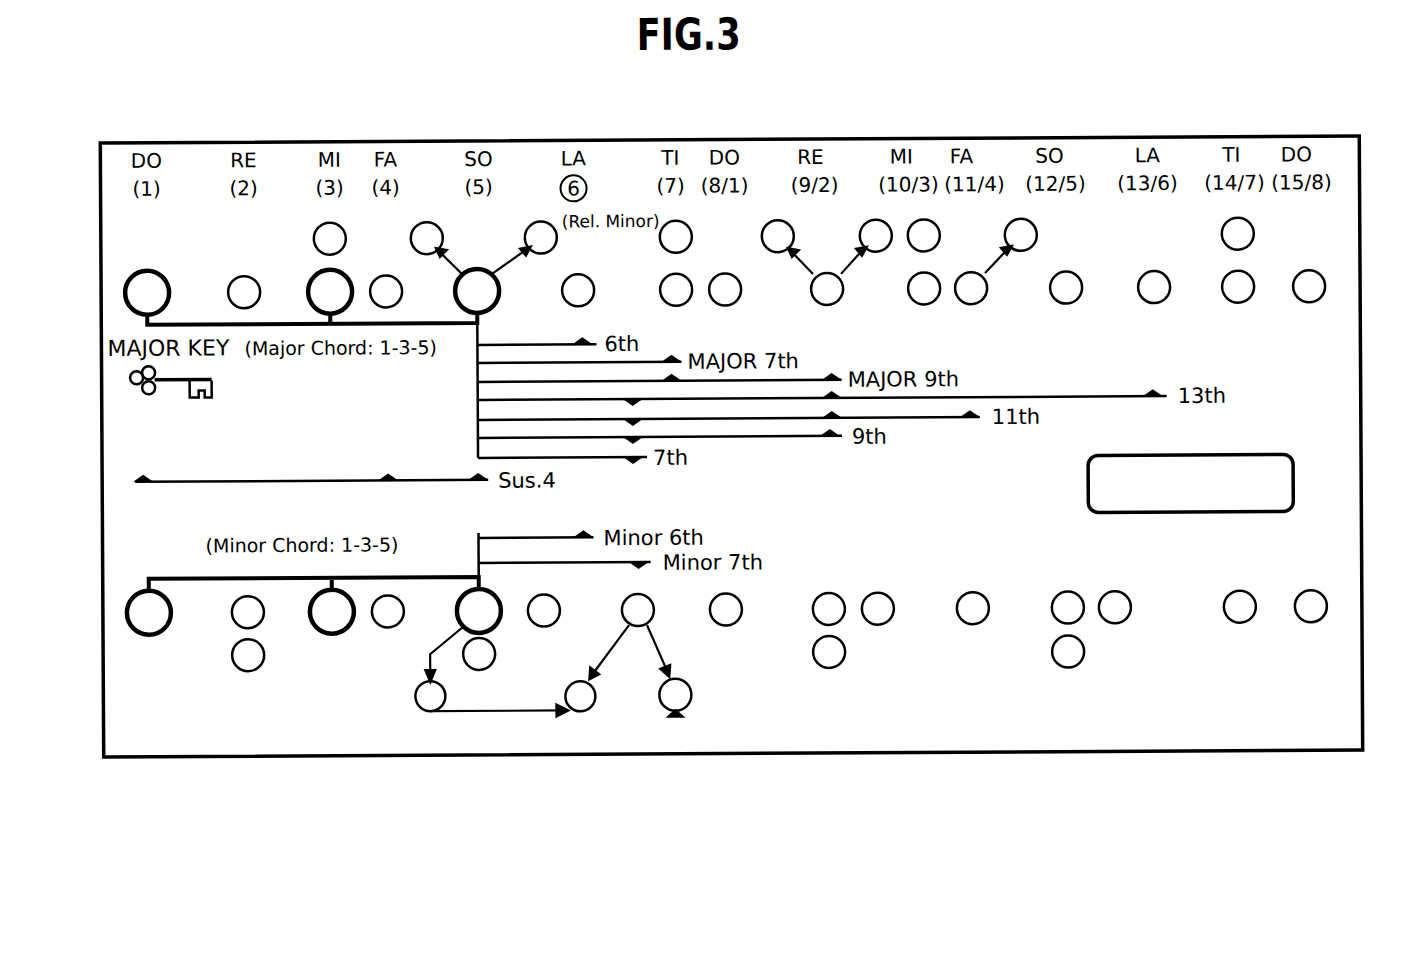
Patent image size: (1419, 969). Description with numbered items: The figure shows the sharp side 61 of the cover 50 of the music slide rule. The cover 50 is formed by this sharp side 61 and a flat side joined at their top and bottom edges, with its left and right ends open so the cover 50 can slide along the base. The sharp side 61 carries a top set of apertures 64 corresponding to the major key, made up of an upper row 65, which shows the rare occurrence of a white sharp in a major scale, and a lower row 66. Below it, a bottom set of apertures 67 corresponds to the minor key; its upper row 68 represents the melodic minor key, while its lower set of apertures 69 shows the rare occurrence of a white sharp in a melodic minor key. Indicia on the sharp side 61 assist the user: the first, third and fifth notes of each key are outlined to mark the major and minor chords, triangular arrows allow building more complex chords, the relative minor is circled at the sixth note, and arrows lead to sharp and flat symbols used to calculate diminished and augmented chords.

The cover 50 is at (1300, 106).
The sharp side 61 is at (1332, 499).
The top set of apertures 64 is at (122, 156).
The upper row 65 is at (1257, 242).
The lower row 66 is at (1330, 297).
The bottom set of apertures 67 is at (122, 574).
The upper row 68 is at (1325, 617).
The lower set of apertures 69 is at (1330, 660).